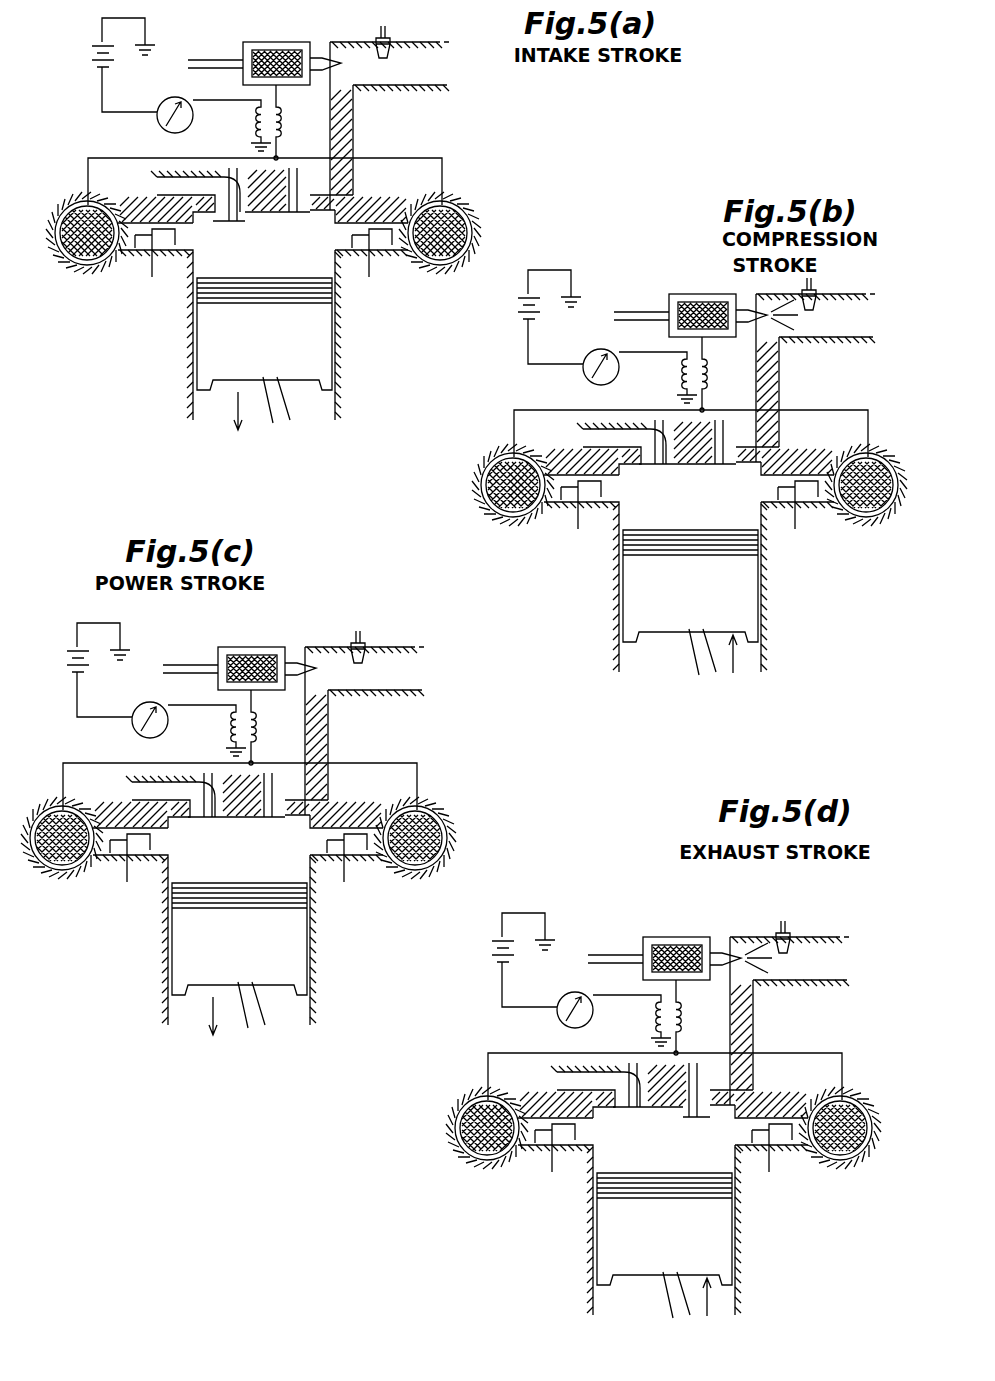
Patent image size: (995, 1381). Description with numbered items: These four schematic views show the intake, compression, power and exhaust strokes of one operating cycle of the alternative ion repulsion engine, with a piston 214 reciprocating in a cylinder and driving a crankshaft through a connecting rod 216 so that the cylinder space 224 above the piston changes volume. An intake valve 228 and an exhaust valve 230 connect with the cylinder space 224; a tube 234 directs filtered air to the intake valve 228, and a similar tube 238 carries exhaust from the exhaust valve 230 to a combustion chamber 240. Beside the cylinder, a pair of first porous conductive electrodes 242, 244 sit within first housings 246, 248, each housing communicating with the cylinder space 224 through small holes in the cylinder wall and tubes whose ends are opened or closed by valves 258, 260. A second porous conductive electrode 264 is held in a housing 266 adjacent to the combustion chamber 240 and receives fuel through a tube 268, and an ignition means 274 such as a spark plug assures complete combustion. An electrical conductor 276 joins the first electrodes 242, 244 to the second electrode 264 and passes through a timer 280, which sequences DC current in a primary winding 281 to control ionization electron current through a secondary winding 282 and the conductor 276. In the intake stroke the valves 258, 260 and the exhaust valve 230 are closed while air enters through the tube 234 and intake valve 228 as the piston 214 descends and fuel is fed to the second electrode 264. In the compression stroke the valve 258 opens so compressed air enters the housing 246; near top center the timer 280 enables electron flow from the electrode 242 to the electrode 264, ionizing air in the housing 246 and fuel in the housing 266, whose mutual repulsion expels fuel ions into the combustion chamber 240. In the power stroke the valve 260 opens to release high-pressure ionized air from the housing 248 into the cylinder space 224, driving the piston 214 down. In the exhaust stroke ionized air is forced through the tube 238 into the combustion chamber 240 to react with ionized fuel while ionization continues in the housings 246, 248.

In FIG. 5A, the piston 214 is at (320, 388).
In FIG. 5B, the piston 214 is at (689, 586).
In FIG. 5C, the piston 214 is at (238, 937).
In FIG. 5D, the piston 214 is at (663, 1210).
In FIG. 5A, the connecting rod 216 is at (292, 420).
In FIG. 5B, the connecting rod 216 is at (665, 669).
In FIG. 5C, the connecting rod 216 is at (267, 1025).
In FIG. 5D, the connecting rod 216 is at (618, 1295).
In FIG. 5A, the cylinder space 224 is at (250, 270).
In FIG. 5B, the cylinder space 224 is at (690, 586).
In FIG. 5C, the cylinder space 224 is at (214, 937).
In FIG. 5D, the cylinder space 224 is at (640, 1227).
In FIG. 5A, the intake valve 228 is at (218, 226).
In FIG. 5B, the intake valve 228 is at (671, 442).
In FIG. 5C, the intake valve 228 is at (210, 818).
In FIG. 5D, the intake valve 228 is at (631, 1104).
In FIG. 5A, the exhaust valve 230 is at (298, 220).
In FIG. 5B, the exhaust valve 230 is at (699, 460).
In FIG. 5C, the exhaust valve 230 is at (269, 820).
In FIG. 5D, the exhaust valve 230 is at (693, 1105).
In FIG. 5A, the tube 234 is at (165, 181).
In FIG. 5B, the tube 234 is at (625, 449).
In FIG. 5C, the tube 234 is at (173, 805).
In FIG. 5D, the tube 234 is at (597, 1095).
In FIG. 5A, the tube 238 is at (358, 138).
In FIG. 5B, the tube 238 is at (790, 378).
In FIG. 5C, the tube 238 is at (338, 731).
In FIG. 5D, the tube 238 is at (762, 1021).
In FIG. 5A, the combustion chamber 240 is at (412, 88).
In FIG. 5B, the combustion chamber 240 is at (815, 333).
In FIG. 5C, the combustion chamber 240 is at (374, 686).
In FIG. 5D, the combustion chamber 240 is at (789, 974).
In FIG. 5A, the first porous conductive electrode 242 is at (460, 222).
In FIG. 5B, the first porous conductive electrode 242 is at (869, 469).
In FIG. 5C, the first porous conductive electrode 242 is at (442, 835).
In FIG. 5D, the first porous conductive electrode 242 is at (830, 1116).
In FIG. 5A, the first porous conductive electrode 244 is at (65, 210).
In FIG. 5B, the first porous conductive electrode 244 is at (476, 485).
In FIG. 5C, the first porous conductive electrode 244 is at (59, 860).
In FIG. 5D, the first porous conductive electrode 244 is at (466, 1144).
In FIG. 5A, the first housing 246 is at (445, 268).
In FIG. 5B, the first housing 246 is at (866, 511).
In FIG. 5C, the first housing 246 is at (434, 842).
In FIG. 5D, the first housing 246 is at (840, 1142).
In FIG. 5A, the first housing 248 is at (70, 265).
In FIG. 5B, the first housing 248 is at (513, 500).
In FIG. 5C, the first housing 248 is at (62, 872).
In FIG. 5D, the first housing 248 is at (487, 1157).
In FIG. 5A, the valve 258 is at (372, 270).
In FIG. 5B, the valve 258 is at (797, 528).
In FIG. 5C, the valve 258 is at (353, 873).
In FIG. 5D, the valve 258 is at (773, 1169).
In FIG. 5A, the valve 260 is at (150, 262).
In FIG. 5B, the valve 260 is at (573, 520).
In FIG. 5C, the valve 260 is at (128, 877).
In FIG. 5D, the valve 260 is at (542, 1167).
In FIG. 5A, the second porous conductive electrode 264 is at (279, 50).
In FIG. 5B, the second porous conductive electrode 264 is at (713, 302).
In FIG. 5C, the second porous conductive electrode 264 is at (278, 645).
In FIG. 5D, the second porous conductive electrode 264 is at (700, 939).
In FIG. 5A, the housing 266 is at (312, 42).
In FIG. 5B, the housing 266 is at (716, 298).
In FIG. 5C, the housing 266 is at (265, 648).
In FIG. 5D, the housing 266 is at (690, 942).
In FIG. 5A, the tube 268 is at (207, 60).
In FIG. 5B, the tube 268 is at (637, 303).
In FIG. 5C, the tube 268 is at (190, 652).
In FIG. 5D, the tube 268 is at (613, 941).
In FIG. 5A, the ignition means 274 is at (392, 35).
In FIG. 5B, the ignition means 274 is at (836, 292).
In FIG. 5C, the ignition means 274 is at (385, 640).
In FIG. 5D, the ignition means 274 is at (810, 927).
In FIG. 5A, the electrical conductor 276 is at (100, 158).
In FIG. 5B, the electrical conductor 276 is at (666, 433).
In FIG. 5C, the electrical conductor 276 is at (244, 786).
In FIG. 5D, the electrical conductor 276 is at (663, 1065).
In FIG. 5A, the timer 280 is at (170, 100).
In FIG. 5B, the timer 280 is at (590, 362).
In FIG. 5C, the timer 280 is at (137, 707).
In FIG. 5D, the timer 280 is at (562, 997).
In FIG. 5A, the primary winding 281 is at (256, 128).
In FIG. 5B, the primary winding 281 is at (658, 377).
In FIG. 5C, the primary winding 281 is at (207, 730).
In FIG. 5D, the primary winding 281 is at (632, 1020).
In FIG. 5A, the secondary winding 282 is at (283, 113).
In FIG. 5B, the secondary winding 282 is at (718, 374).
In FIG. 5C, the secondary winding 282 is at (267, 727).
In FIG. 5D, the secondary winding 282 is at (692, 1017).